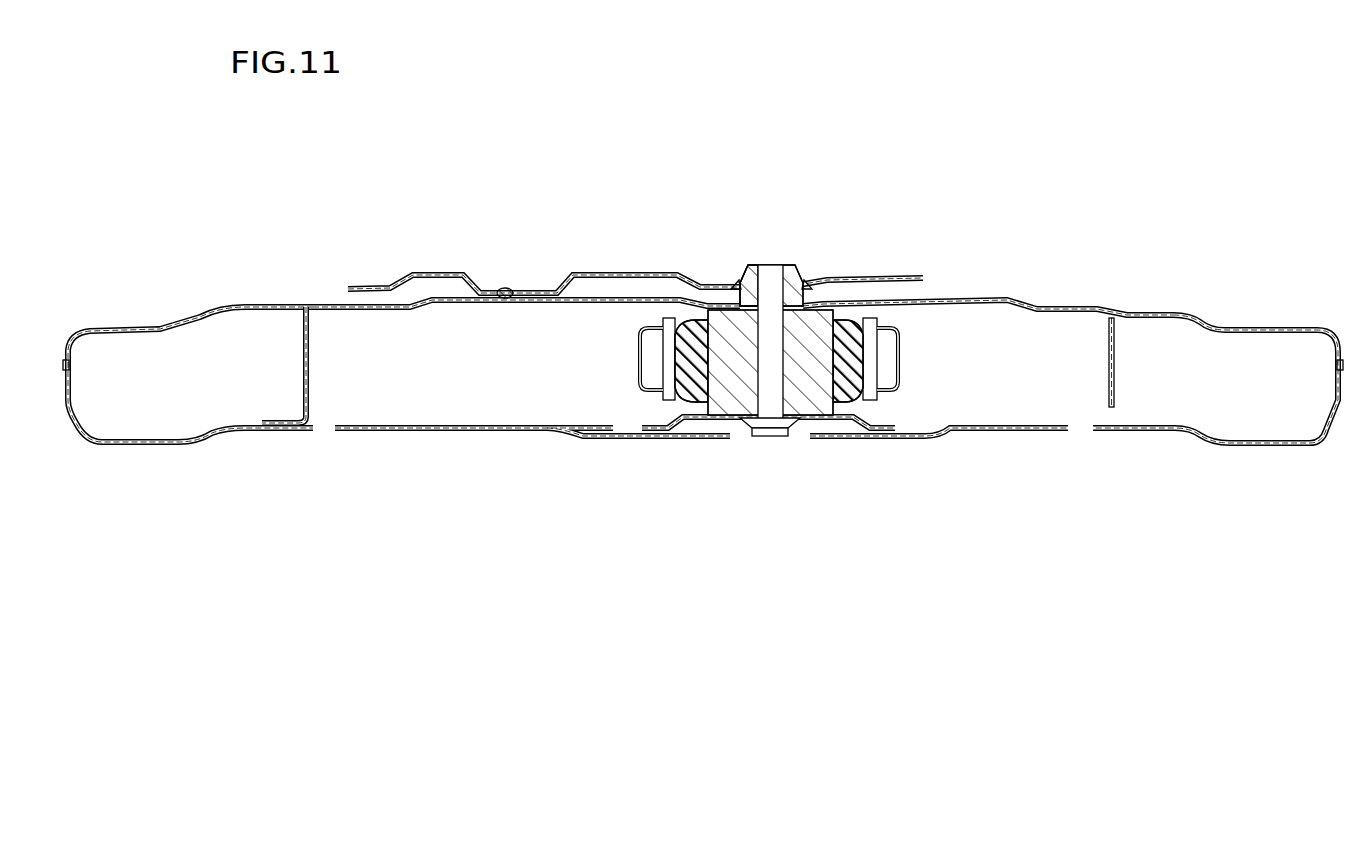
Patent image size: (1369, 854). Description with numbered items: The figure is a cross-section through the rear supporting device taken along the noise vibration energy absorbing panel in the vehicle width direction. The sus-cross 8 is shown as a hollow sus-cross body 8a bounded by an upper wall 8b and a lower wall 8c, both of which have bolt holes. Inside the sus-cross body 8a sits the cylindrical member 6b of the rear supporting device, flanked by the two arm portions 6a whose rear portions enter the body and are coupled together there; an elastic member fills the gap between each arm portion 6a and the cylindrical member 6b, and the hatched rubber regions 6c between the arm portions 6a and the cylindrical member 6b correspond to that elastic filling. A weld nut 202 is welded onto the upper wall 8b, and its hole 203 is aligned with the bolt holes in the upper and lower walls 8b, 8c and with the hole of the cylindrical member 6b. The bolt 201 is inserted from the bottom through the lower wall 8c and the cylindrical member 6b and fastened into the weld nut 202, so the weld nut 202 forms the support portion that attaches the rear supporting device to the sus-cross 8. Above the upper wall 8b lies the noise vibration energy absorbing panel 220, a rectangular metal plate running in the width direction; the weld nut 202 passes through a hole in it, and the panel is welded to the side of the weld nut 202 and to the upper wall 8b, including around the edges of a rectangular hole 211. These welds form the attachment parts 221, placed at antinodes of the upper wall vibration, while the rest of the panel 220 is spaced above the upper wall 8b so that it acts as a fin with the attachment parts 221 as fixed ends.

The sus-cross 8 is at (1173, 240).
The sus-cross body 8a is at (688, 365).
The upper wall 8b is at (1052, 305).
The lower wall 8c is at (1015, 433).
The bolt 201 is at (775, 377).
The weld nut 202 is at (787, 280).
The hole 203 is at (768, 280).
The rectangular hole 211 is at (525, 290).
The noise vibration energy absorbing panel 220 is at (877, 283).
The attachment part 221 is at (507, 287).
The arm portion 6a is at (643, 354).
The cylindrical member 6b is at (738, 395).
The rubber elastic body 6c is at (685, 385).